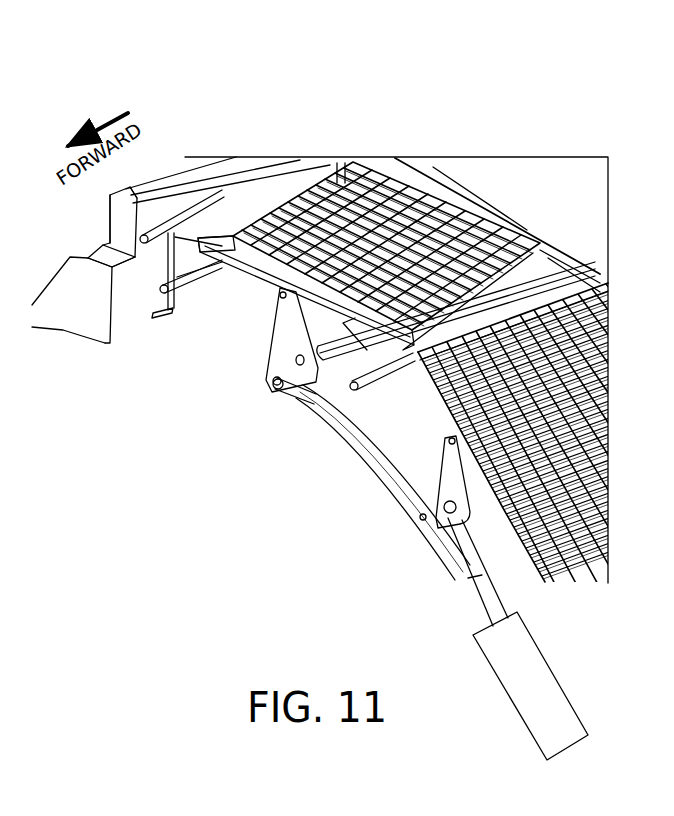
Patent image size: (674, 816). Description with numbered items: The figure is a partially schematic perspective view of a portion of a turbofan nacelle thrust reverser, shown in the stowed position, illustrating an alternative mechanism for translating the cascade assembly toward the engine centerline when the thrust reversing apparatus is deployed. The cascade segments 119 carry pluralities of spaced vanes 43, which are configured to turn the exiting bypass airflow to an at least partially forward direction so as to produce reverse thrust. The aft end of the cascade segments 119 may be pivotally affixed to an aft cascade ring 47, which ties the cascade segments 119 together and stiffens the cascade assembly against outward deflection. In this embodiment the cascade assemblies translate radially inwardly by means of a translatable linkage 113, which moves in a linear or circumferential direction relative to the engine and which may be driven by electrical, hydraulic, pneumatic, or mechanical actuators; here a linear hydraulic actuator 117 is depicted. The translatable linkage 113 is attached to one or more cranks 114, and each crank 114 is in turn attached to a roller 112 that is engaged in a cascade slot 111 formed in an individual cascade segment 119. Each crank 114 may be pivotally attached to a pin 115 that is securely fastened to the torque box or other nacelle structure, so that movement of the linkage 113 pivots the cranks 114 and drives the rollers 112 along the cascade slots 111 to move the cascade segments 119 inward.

The vanes 43 is at (380, 195).
The aft cascade ring 47 is at (598, 268).
The cascade slot 111 is at (235, 268).
The roller 112 is at (277, 295).
The translatable linkage 113 is at (367, 457).
The crank 114 is at (443, 478).
The pin 115 is at (447, 512).
The linear hydraulic actuator 117 is at (560, 683).
The cascade segment 119 is at (414, 141).